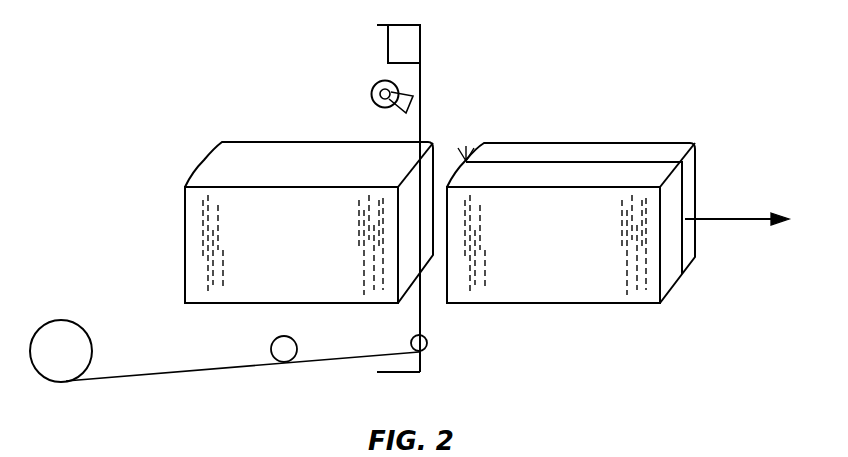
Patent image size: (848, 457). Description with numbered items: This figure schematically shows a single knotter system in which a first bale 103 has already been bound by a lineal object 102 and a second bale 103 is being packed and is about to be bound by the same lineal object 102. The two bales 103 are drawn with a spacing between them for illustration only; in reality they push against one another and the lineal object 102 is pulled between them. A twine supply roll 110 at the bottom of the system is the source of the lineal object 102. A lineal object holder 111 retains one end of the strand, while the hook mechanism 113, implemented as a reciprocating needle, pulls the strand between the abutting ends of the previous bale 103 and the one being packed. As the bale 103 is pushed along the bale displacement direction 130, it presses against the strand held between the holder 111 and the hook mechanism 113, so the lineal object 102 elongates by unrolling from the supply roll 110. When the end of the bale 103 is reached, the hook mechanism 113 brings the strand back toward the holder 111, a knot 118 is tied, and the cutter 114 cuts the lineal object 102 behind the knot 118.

The lineal object 102 is at (420, 116).
The lineal object holder 111 is at (388, 45).
The cutter 114 is at (372, 91).
The bale 103 is at (250, 150).
The knot 118 is at (468, 160).
The bale displacement direction 130 is at (722, 221).
The twine supply roll 110 is at (82, 325).
The hook mechanism 113 is at (398, 373).